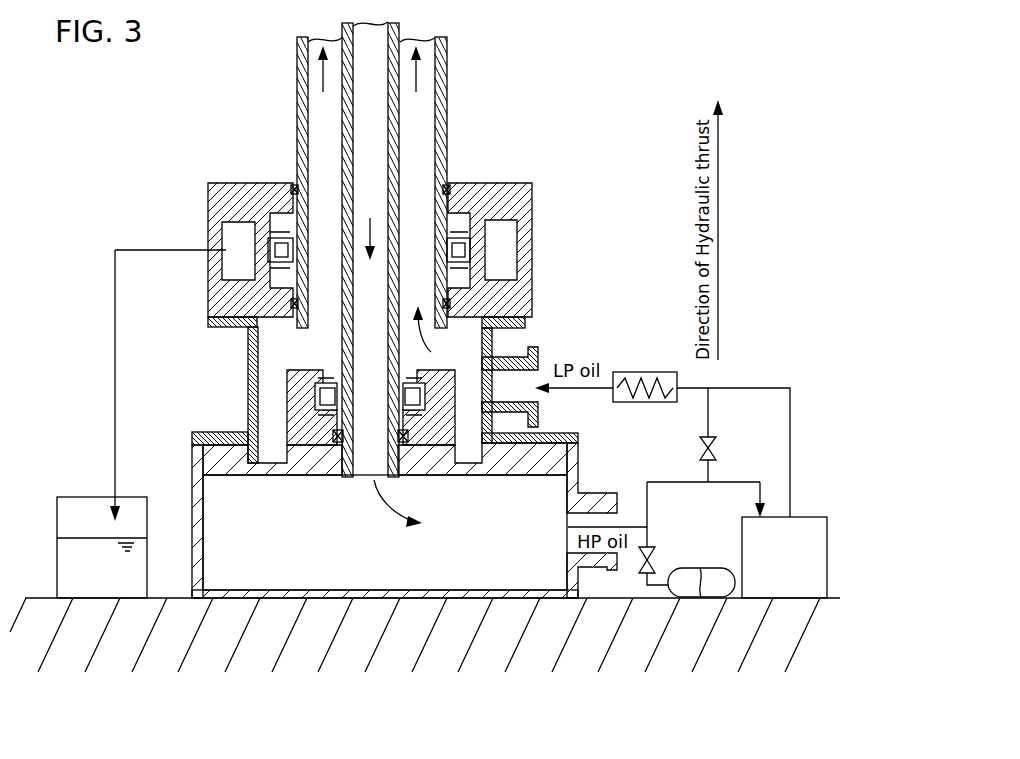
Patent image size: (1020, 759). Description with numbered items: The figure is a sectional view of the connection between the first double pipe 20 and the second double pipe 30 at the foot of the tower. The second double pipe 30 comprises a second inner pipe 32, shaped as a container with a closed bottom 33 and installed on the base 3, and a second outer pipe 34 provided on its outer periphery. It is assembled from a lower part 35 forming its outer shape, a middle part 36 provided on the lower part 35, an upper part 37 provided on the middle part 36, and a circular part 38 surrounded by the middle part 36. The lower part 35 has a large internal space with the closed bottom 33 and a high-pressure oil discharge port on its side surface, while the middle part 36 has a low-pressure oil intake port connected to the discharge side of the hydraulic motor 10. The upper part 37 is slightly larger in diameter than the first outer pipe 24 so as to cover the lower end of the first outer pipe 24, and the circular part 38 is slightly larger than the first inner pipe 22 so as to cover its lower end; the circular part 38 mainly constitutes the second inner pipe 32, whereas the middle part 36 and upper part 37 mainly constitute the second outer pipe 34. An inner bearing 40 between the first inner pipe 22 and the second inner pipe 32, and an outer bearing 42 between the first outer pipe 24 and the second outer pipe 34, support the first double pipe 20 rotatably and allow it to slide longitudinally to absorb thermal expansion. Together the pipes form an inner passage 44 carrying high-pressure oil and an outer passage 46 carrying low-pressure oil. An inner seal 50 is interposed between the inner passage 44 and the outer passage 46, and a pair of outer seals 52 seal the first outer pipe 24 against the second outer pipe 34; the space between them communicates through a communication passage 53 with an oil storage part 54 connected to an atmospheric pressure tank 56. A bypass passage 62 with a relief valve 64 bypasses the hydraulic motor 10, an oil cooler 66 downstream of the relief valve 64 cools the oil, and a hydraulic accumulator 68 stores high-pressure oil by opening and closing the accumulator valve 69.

The base 3 is at (236, 646).
The hydraulic motor 10 is at (808, 517).
The first double pipe 20 is at (480, 68).
The first inner pipe 22 is at (340, 112).
The first outer pipe 24 is at (297, 140).
The second double pipe 30 is at (370, 492).
The second inner pipe 32 is at (280, 400).
The closed bottom 33 is at (313, 600).
The second outer pipe 34 is at (226, 221).
The lower part 35 is at (190, 565).
The middle part 36 is at (248, 340).
The upper part 37 is at (215, 183).
The circular part 38 is at (434, 372).
The inner bearing 40 is at (335, 383).
The outer bearing 42 is at (284, 242).
The inner passage 44 is at (372, 157).
The outer passage 46 is at (418, 132).
The inner seal 50 is at (333, 443).
The outer seals 52 is at (488, 183).
The communication passage 53 is at (505, 213).
The oil storage part 54 is at (505, 250).
The atmospheric pressure tank 56 is at (70, 497).
The bypass passage 62 is at (712, 402).
The relief valve 64 is at (716, 448).
The oil cooler 66 is at (660, 372).
The hydraulic accumulator 68 is at (712, 568).
The accumulator valve 69 is at (653, 555).